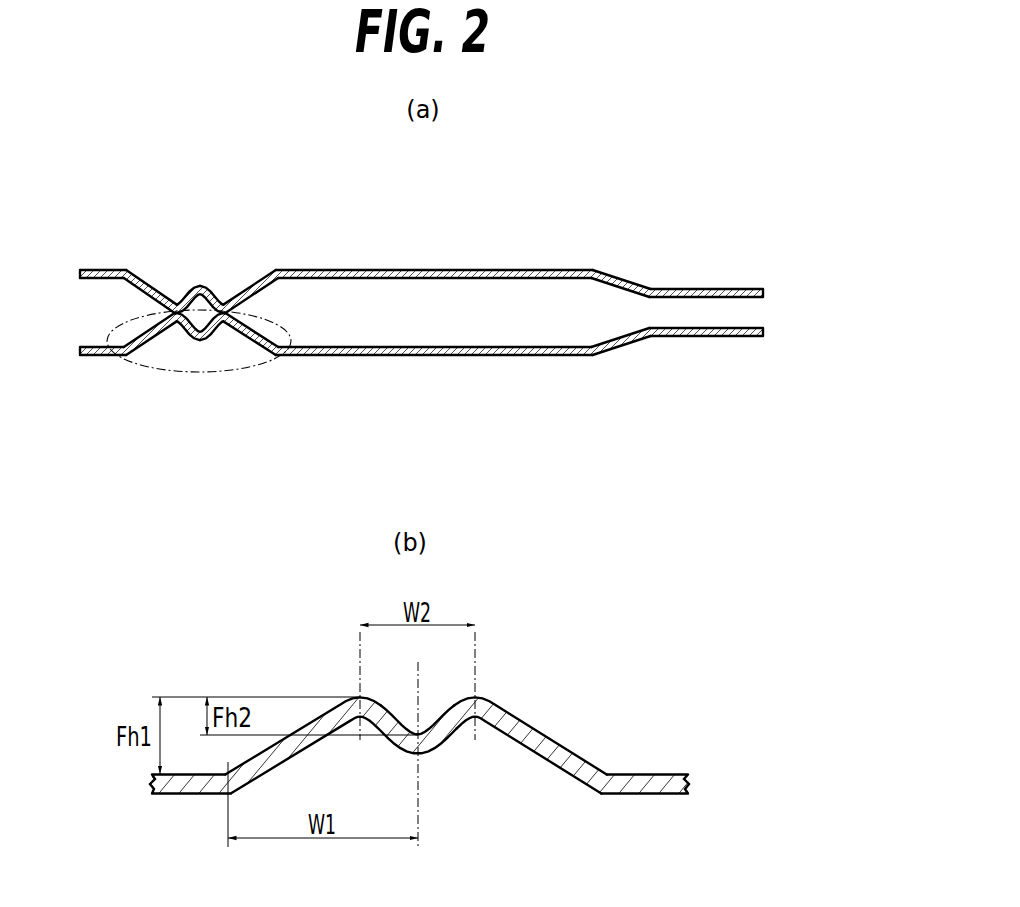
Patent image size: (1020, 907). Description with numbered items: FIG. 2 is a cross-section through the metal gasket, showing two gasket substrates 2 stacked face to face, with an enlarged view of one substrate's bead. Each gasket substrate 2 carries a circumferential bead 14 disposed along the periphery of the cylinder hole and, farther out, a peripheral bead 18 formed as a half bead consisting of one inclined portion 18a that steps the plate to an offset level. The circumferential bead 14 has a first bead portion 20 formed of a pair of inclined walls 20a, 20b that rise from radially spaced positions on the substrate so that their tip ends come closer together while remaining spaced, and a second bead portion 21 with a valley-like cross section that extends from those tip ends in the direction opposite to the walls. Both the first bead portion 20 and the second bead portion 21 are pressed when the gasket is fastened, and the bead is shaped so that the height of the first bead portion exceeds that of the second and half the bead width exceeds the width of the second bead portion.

The gasket substrate 2 is at (490, 268).
The circumferential bead 14 is at (371, 479).
The peripheral bead 18 is at (638, 281).
The inclined portion 18a is at (608, 281).
The first bead portion 20 is at (371, 479).
The inclined wall 20a is at (137, 277).
The inclined wall 20b is at (423, 493).
The second bead portion 21 is at (198, 286).